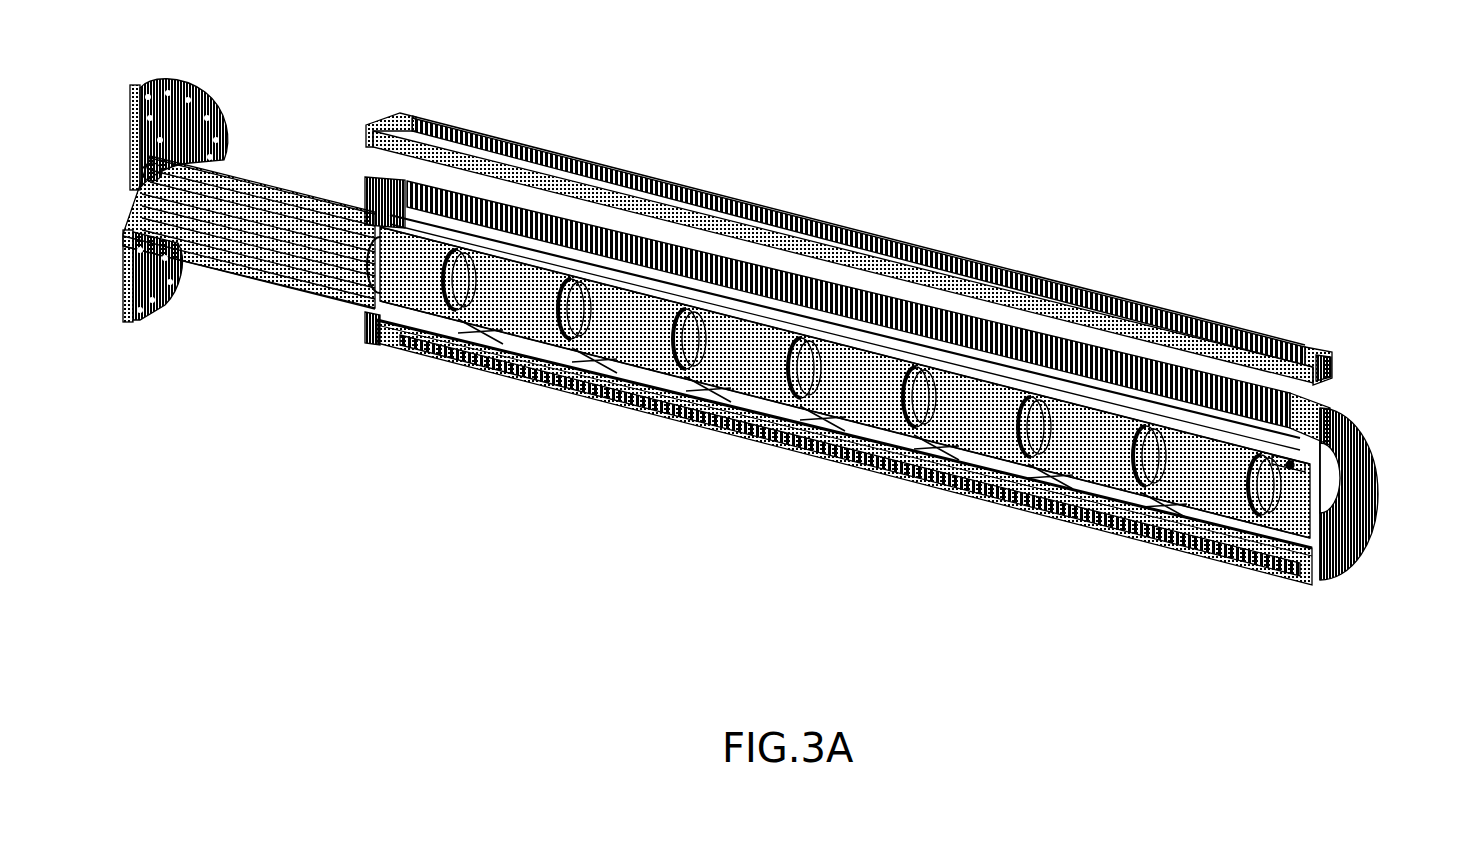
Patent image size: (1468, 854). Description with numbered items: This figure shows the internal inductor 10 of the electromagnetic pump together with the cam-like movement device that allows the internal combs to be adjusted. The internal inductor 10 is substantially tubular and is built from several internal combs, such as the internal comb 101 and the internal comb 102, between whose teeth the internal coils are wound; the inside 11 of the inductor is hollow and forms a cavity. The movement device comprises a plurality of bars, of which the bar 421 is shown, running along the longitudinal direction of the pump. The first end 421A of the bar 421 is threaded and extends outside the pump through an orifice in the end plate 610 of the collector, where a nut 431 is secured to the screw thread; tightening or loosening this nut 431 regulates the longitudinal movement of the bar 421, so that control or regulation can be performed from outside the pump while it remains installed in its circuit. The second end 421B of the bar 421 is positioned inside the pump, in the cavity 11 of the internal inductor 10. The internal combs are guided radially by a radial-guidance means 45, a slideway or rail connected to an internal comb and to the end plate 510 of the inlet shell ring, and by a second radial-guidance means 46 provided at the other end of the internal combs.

The internal inductor 10 is at (937, 165).
The inside of the internal inductor 11 is at (870, 403).
The radial-guidance means 45 is at (1332, 368).
The second radial-guidance means 46 is at (372, 134).
The internal comb 101 is at (1304, 343).
The internal comb 102 is at (1312, 420).
The bar 421 is at (250, 192).
The first end of the bar 421A is at (147, 166).
The second end of the bar 421B is at (1290, 470).
The nut 431 is at (127, 164).
The end plate of the inlet shell ring 510 is at (1358, 553).
The end plate of the collector 610 is at (152, 313).